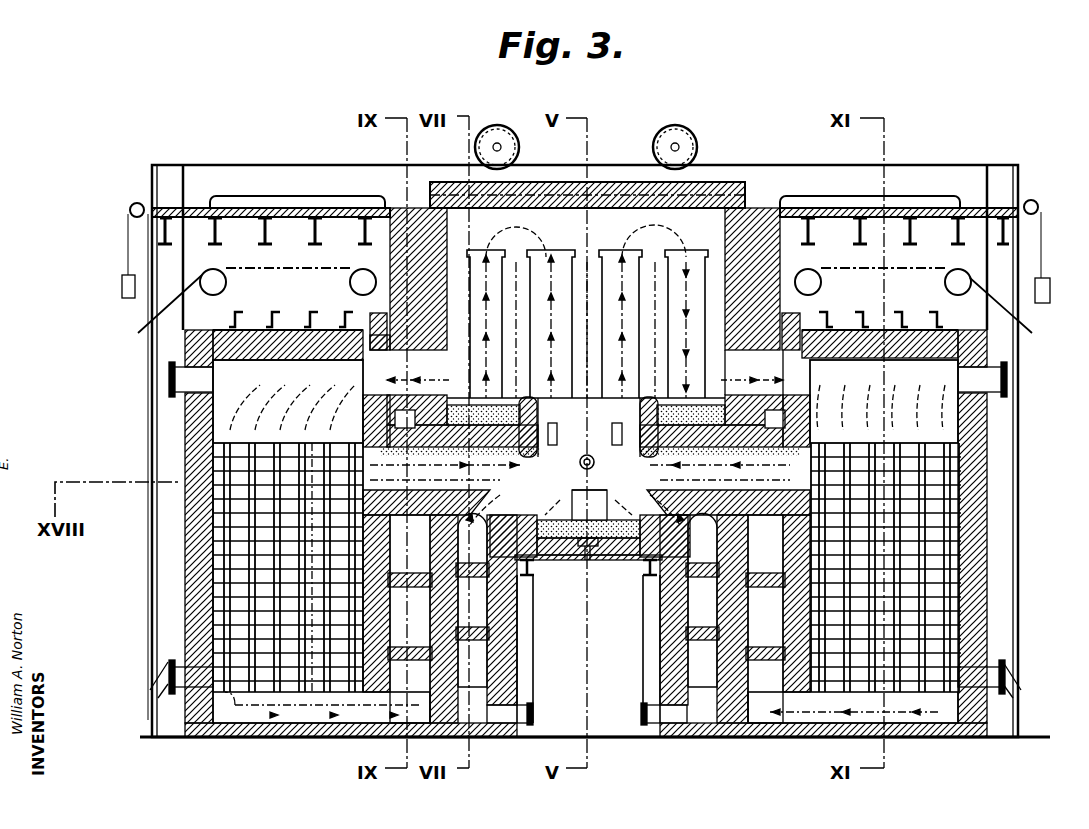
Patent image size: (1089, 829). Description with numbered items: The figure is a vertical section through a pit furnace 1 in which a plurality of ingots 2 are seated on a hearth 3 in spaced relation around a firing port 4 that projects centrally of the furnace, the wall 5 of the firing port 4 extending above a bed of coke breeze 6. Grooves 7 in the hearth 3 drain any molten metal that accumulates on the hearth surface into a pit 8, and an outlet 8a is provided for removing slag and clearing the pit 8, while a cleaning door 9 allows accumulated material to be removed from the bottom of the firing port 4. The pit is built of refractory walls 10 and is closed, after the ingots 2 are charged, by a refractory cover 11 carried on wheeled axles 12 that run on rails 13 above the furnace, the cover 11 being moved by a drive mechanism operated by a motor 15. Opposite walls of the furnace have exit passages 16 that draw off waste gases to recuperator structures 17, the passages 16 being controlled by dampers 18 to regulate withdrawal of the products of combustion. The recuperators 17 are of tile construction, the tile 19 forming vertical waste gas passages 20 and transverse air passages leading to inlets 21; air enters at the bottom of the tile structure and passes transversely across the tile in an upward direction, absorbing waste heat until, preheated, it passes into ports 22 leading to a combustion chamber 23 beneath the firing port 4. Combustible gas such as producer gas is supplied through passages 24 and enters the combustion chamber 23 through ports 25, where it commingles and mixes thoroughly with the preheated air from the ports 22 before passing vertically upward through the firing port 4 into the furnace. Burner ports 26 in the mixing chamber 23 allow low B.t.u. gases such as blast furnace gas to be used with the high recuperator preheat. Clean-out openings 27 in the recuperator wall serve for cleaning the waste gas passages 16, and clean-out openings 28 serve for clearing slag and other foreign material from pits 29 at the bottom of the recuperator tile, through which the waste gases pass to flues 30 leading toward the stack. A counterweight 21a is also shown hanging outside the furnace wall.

The pit furnace 1 is at (632, 252).
The ingots 2 is at (607, 272).
The hearth 3 is at (508, 458).
The firing port 4 is at (563, 428).
The wall 5 is at (640, 418).
The bed of coke breeze 6 is at (487, 405).
The grooves 7 is at (608, 436).
The pit 8 is at (608, 524).
The outlet 8a is at (590, 572).
The cleaning door 9 is at (603, 505).
The refractory walls 10 is at (447, 300).
The cover 11 is at (712, 182).
The wheeled axles 12 is at (678, 145).
The rails 13 is at (778, 170).
The motor 15 is at (586, 411).
The exit passages 16 is at (754, 372).
The recuperator structures 17 is at (881, 407).
The dampers 18 is at (365, 385).
The tile 19 is at (315, 557).
The vertical waste gas passages 20 is at (913, 432).
The inlets 21 is at (1050, 290).
The counterweight 21a is at (122, 286).
The ports 22 is at (585, 467).
The combustion chamber 23 is at (589, 497).
The passages 24 is at (475, 668).
The ports 25 is at (760, 472).
The burner ports 26 is at (596, 463).
The clean-out openings 27 is at (168, 382).
The clean-out openings 28 is at (533, 712).
The pits 29 is at (853, 707).
The flues 30 is at (586, 619).